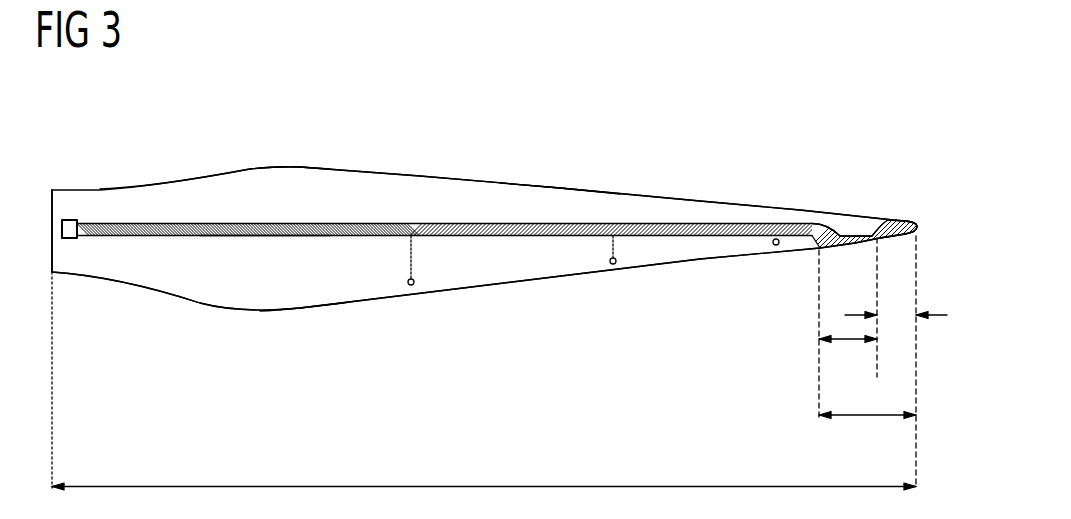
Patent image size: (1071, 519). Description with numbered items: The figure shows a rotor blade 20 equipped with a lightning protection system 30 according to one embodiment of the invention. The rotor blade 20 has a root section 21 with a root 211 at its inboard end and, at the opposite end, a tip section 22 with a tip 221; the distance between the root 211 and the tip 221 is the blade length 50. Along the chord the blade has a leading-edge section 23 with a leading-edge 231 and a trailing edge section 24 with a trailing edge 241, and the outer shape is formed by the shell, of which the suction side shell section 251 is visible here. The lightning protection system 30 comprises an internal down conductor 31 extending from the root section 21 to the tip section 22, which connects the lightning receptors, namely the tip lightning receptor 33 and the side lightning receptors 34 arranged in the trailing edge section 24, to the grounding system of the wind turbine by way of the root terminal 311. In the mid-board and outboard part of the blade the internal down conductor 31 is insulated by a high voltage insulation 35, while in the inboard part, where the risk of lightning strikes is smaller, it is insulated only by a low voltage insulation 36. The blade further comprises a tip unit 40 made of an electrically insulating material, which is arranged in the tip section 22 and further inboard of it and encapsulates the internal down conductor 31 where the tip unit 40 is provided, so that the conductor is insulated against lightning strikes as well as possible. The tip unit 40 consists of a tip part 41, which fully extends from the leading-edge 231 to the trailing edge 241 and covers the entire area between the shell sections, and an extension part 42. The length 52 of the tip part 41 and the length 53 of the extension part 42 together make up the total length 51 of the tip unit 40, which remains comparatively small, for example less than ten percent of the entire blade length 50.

The rotor blade 20 is at (480, 93).
The root section 21 is at (78, 263).
The root 211 is at (52, 195).
The tip section 22 is at (892, 206).
The tip 221 is at (918, 228).
The leading-edge section 23 is at (455, 190).
The leading-edge 231 is at (530, 187).
The trailing edge section 24 is at (366, 289).
The trailing edge 241 is at (297, 312).
The suction side shell section 251 is at (284, 180).
The lightning protection system 30 is at (356, 191).
The internal down conductor 31 is at (200, 223).
The root terminal 311 is at (73, 220).
The tip lightning receptor 33 is at (880, 218).
The side lightning receptors 34 is at (415, 288).
The high voltage insulation 35 is at (578, 223).
The low voltage insulation 36 is at (260, 237).
The tip unit 40 is at (841, 218).
The tip part 41 is at (902, 240).
The extension part 42 is at (857, 248).
The blade length 50 is at (483, 486).
The total length of the tip unit 51 is at (868, 418).
The length of the tip part 52 is at (897, 320).
The length of the extension part 53 is at (850, 342).